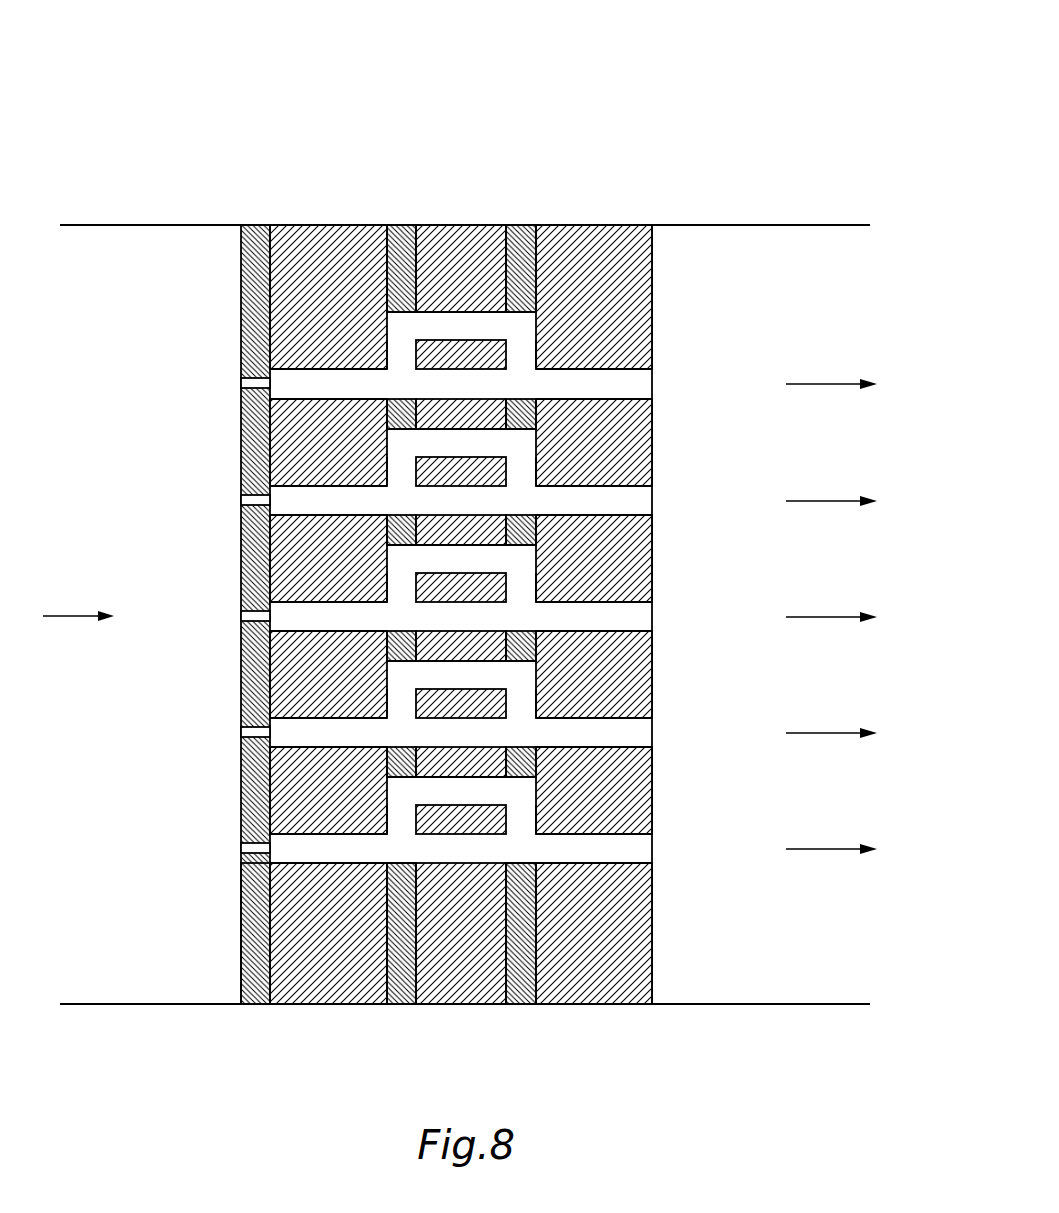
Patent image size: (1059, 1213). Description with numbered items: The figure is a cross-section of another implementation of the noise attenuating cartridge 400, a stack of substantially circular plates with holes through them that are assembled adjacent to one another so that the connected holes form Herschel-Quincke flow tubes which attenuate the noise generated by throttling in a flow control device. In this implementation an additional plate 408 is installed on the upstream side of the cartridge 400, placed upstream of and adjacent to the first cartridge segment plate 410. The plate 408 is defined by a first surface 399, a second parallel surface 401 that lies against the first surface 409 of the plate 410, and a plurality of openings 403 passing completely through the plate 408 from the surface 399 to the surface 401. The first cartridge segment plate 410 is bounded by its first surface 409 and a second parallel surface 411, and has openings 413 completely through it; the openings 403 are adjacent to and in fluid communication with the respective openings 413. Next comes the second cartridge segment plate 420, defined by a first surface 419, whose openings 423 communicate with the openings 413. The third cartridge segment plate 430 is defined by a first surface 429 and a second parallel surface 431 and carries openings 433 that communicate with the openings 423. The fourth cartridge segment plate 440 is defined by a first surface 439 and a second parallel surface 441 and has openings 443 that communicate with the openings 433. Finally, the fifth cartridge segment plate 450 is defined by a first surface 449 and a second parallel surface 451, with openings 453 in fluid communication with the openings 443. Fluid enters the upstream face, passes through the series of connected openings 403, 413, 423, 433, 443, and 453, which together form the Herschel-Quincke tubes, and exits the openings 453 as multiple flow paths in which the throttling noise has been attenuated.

The noise attenuating cartridge 400 is at (629, 124).
The first surface 399 is at (241, 975).
The second parallel surface 401 is at (270, 975).
The openings 403 is at (284, 385).
The additional plate 408 is at (255, 1004).
The first surface 409 is at (247, 225).
The first cartridge segment plate 410 is at (311, 279).
The second parallel surface 411 is at (395, 225).
The openings 413 is at (314, 396).
The first surface 419 is at (387, 975).
The second cartridge segment plate 420 is at (401, 1004).
The openings 423 is at (402, 347).
The first surface 429 is at (407, 225).
The third cartridge segment plate 430 is at (443, 279).
The second parallel surface 431 is at (513, 225).
The openings 433 is at (472, 322).
The first surface 439 is at (506, 975).
The fourth cartridge segment plate 440 is at (520, 1004).
The second parallel surface 441 is at (536, 975).
The openings 443 is at (523, 347).
The first surface 449 is at (526, 225).
The fifth cartridge segment plate 450 is at (576, 279).
The second parallel surface 451 is at (665, 229).
The openings 453 is at (640, 382).